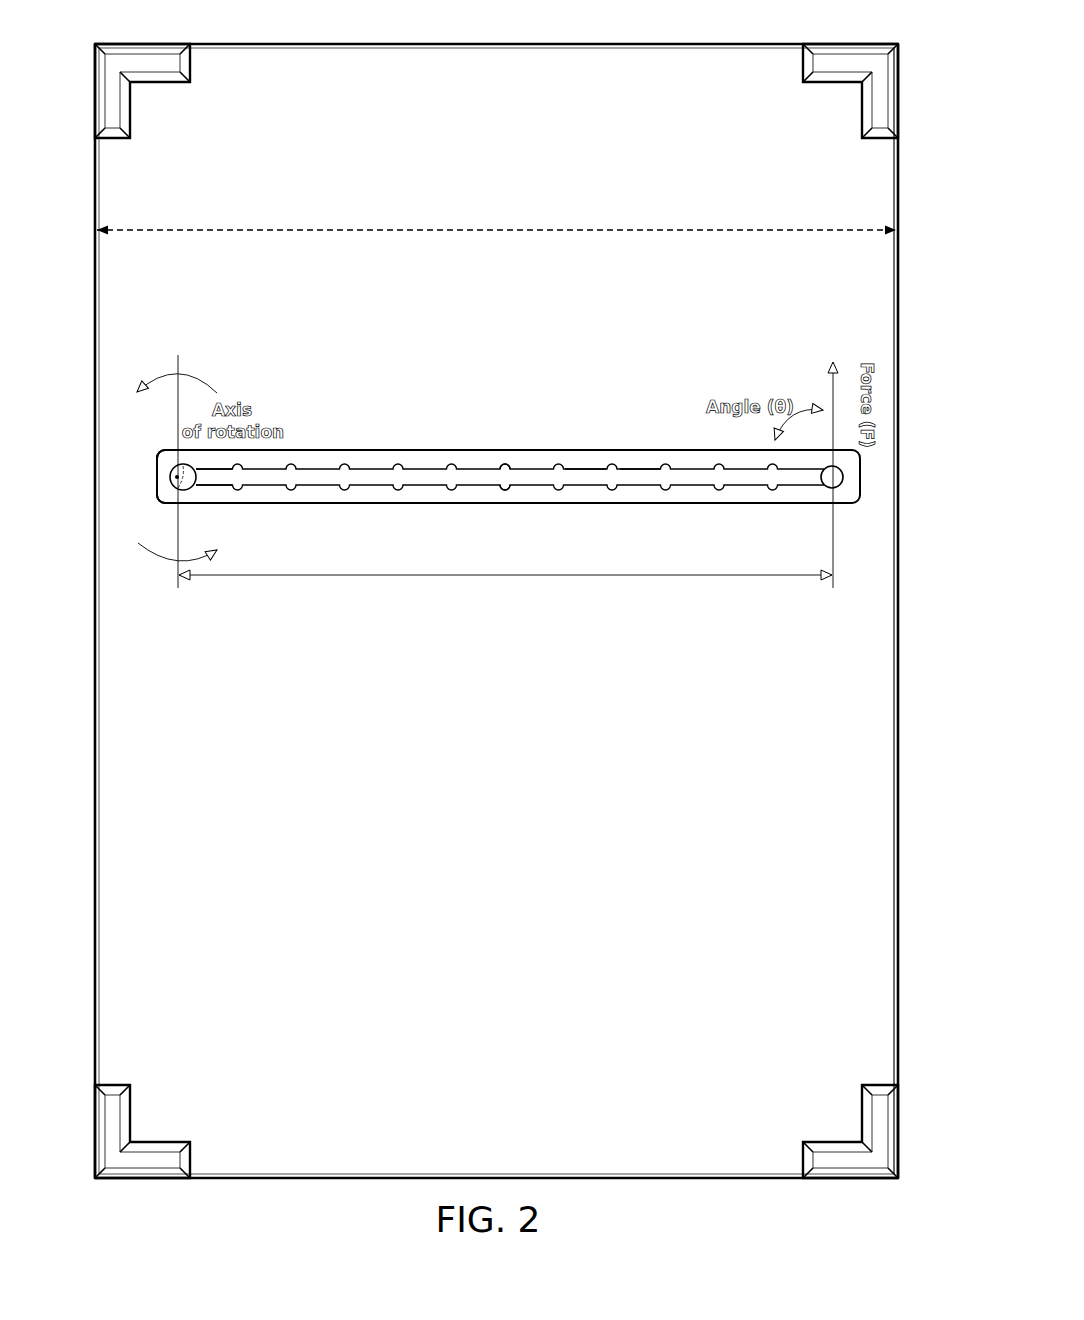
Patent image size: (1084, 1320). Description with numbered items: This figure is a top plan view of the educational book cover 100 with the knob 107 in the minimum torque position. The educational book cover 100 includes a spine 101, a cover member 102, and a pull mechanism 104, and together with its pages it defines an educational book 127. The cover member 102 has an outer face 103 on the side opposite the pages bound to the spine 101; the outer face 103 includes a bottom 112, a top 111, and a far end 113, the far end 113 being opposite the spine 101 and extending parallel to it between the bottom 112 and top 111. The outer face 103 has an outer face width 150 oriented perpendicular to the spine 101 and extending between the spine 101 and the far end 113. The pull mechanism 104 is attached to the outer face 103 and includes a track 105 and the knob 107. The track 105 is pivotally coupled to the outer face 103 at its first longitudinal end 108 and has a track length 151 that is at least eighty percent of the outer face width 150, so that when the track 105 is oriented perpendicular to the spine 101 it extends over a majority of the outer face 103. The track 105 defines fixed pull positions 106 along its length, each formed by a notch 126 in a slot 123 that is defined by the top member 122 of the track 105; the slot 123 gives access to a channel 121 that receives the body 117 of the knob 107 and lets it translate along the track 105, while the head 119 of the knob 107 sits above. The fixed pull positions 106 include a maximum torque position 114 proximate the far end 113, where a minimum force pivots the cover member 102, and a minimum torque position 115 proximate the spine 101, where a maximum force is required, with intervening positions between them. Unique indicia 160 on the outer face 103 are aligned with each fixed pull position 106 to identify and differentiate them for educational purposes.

The educational book cover 100 is at (928, 195).
The spine 101 is at (95, 196).
The cover member 102 is at (737, 57).
The outer face 103 is at (658, 63).
The pull mechanism 104 is at (368, 412).
The track 105 is at (428, 447).
The fixed pull positions 106 is at (522, 463).
The knob 107 is at (176, 456).
The first longitudinal end 108 is at (157, 482).
The top 111 is at (540, 43).
The bottom 112 is at (660, 1178).
The far end 113 is at (900, 610).
The maximum torque position 114 is at (846, 489).
The minimum torque position 115 is at (168, 493).
The body 117 is at (205, 477).
The head 119 is at (168, 456).
The channel 121 is at (693, 478).
The top member 122 is at (643, 462).
The slot 123 is at (592, 471).
The notch 126 is at (509, 468).
The educational book 127 is at (928, 253).
The outer face width 150 is at (497, 230).
The track length 151 is at (728, 575).
The indicia 160 is at (577, 550).